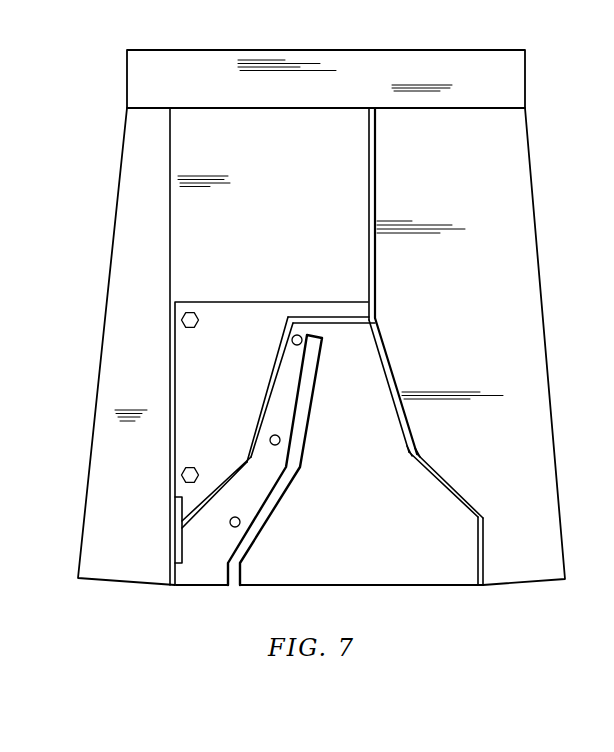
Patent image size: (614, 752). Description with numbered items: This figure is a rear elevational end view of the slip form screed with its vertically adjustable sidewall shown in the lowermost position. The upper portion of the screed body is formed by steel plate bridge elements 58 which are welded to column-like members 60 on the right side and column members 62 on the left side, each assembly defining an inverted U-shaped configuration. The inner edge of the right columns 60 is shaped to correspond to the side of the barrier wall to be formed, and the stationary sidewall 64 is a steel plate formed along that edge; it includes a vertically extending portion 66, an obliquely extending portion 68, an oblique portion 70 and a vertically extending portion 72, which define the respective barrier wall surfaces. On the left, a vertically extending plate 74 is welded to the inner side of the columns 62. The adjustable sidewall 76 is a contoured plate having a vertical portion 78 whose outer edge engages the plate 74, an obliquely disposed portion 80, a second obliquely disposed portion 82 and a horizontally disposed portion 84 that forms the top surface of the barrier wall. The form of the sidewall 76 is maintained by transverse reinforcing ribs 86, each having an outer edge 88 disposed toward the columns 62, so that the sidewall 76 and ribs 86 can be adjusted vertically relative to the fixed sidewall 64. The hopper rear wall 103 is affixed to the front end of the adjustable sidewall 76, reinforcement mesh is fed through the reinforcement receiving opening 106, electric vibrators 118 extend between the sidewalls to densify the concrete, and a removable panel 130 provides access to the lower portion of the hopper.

The bridge element 58 is at (355, 60).
The column-like member 60 is at (518, 163).
The column member 62 is at (118, 243).
The stationary sidewall 64 is at (405, 455).
The vertically extending portion 66 is at (486, 562).
The obliquely extending portion 68 is at (448, 482).
The oblique portion 70 is at (393, 375).
The vertically extending portion 72 is at (370, 203).
The vertically extending plate 74 is at (172, 468).
The adjustable sidewall 76 is at (248, 476).
The vertical portion 78 is at (183, 547).
The obliquely disposed portion 80 is at (221, 484).
The second obliquely disposed portion 82 is at (264, 400).
The horizontally disposed portion 84 is at (325, 318).
The reinforcing rib 86 is at (236, 362).
The outer edge 88 is at (172, 327).
The rear wall 103 is at (276, 226).
The reinforcement receiving opening 106 is at (303, 452).
The electric vibrator 118 is at (280, 437).
The removable panel 130 is at (343, 573).